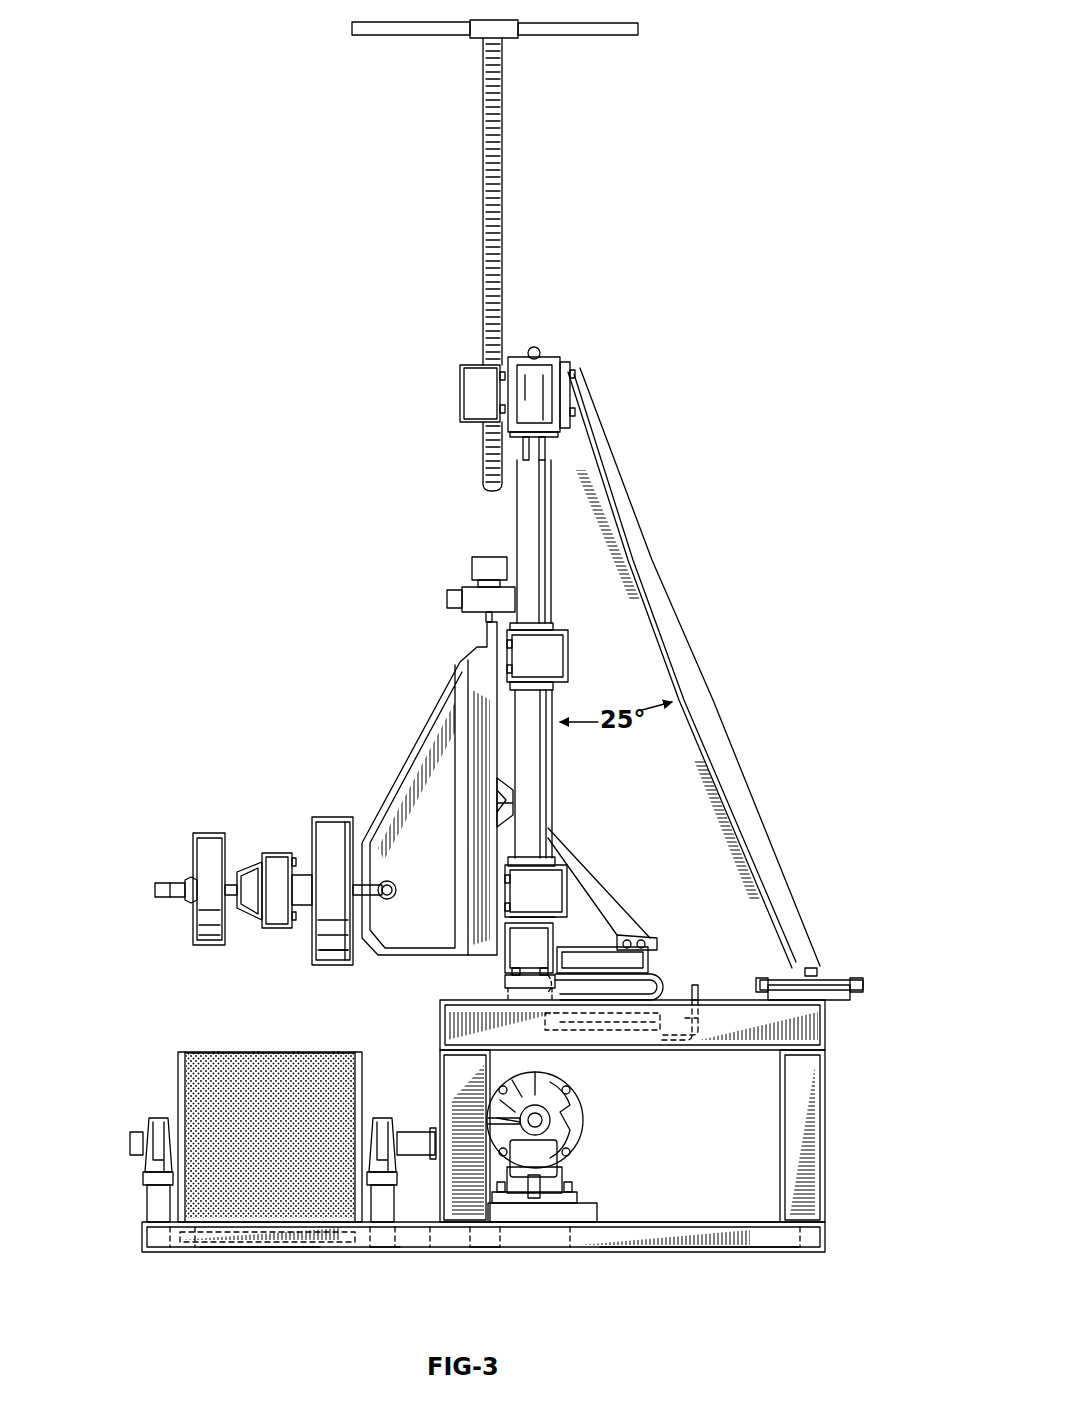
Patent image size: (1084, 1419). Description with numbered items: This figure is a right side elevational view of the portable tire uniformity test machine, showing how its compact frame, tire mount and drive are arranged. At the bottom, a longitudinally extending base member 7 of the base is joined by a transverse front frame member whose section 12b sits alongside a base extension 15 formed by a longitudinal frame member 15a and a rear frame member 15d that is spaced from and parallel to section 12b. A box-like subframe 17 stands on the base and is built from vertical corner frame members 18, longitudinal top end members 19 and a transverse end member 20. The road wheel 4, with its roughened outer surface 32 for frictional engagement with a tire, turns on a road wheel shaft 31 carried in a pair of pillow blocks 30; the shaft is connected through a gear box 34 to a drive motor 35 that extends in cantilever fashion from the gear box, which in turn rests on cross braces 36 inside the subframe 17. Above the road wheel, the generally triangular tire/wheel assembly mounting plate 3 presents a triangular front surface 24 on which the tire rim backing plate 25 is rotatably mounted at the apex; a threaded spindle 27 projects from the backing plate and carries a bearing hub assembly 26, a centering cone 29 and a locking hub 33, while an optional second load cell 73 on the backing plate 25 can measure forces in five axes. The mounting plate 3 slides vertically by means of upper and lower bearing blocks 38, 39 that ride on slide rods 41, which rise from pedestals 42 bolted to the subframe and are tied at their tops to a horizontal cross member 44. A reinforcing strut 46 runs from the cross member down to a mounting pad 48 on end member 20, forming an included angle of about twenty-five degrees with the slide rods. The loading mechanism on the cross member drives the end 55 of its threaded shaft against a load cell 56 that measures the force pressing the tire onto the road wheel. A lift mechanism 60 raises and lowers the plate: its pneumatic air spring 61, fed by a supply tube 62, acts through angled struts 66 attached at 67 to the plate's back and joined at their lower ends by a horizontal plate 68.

The tire/wheel assembly mounting plate 3 is at (424, 703).
The road wheel 4 is at (170, 1071).
The base member 7 is at (722, 1243).
The frame member section 12b is at (483, 1245).
The base extension 15 is at (176, 1254).
The longitudinally extending frame member 15a is at (278, 1240).
The rear frame member 15d is at (380, 1240).
The subframe 17 is at (663, 1111).
The corner frame member 18 is at (450, 1075).
The top end member 19 is at (722, 1018).
The end member 20 is at (820, 1030).
The triangular front surface 24 is at (430, 778).
The tire rim backing plate 25 is at (332, 825).
The bearing hub assembly 26 is at (276, 862).
The threaded spindle 27 is at (165, 884).
The centering cone 29 is at (252, 913).
The pillow block 30 is at (157, 1117).
The road wheel shaft 31 is at (130, 1141).
The roughened outer surface 32 is at (245, 1050).
The locking hub 33 is at (212, 945).
The gear box 34 is at (553, 1178).
The drive motor 35 is at (582, 1122).
The cross brace 36 is at (548, 1215).
The upper bearing block 38 is at (560, 662).
The lower bearing block 39 is at (565, 878).
The slide rod 41 is at (551, 606).
The pedestal 42 is at (540, 933).
The horizontal cross member 44 is at (552, 358).
The reinforcing strut 46 is at (720, 742).
The mounting pad 48 is at (832, 975).
The end of threaded shaft 55 is at (490, 494).
The load cell 56 is at (480, 569).
The lift mechanism 60 is at (666, 961).
The pneumatic air spring 61 is at (620, 988).
The supply tube 62 is at (700, 985).
The strut 66 is at (580, 880).
The attachment point 67 is at (500, 801).
The horizontal plate 68 is at (600, 940).
The second load cell 73 is at (350, 962).